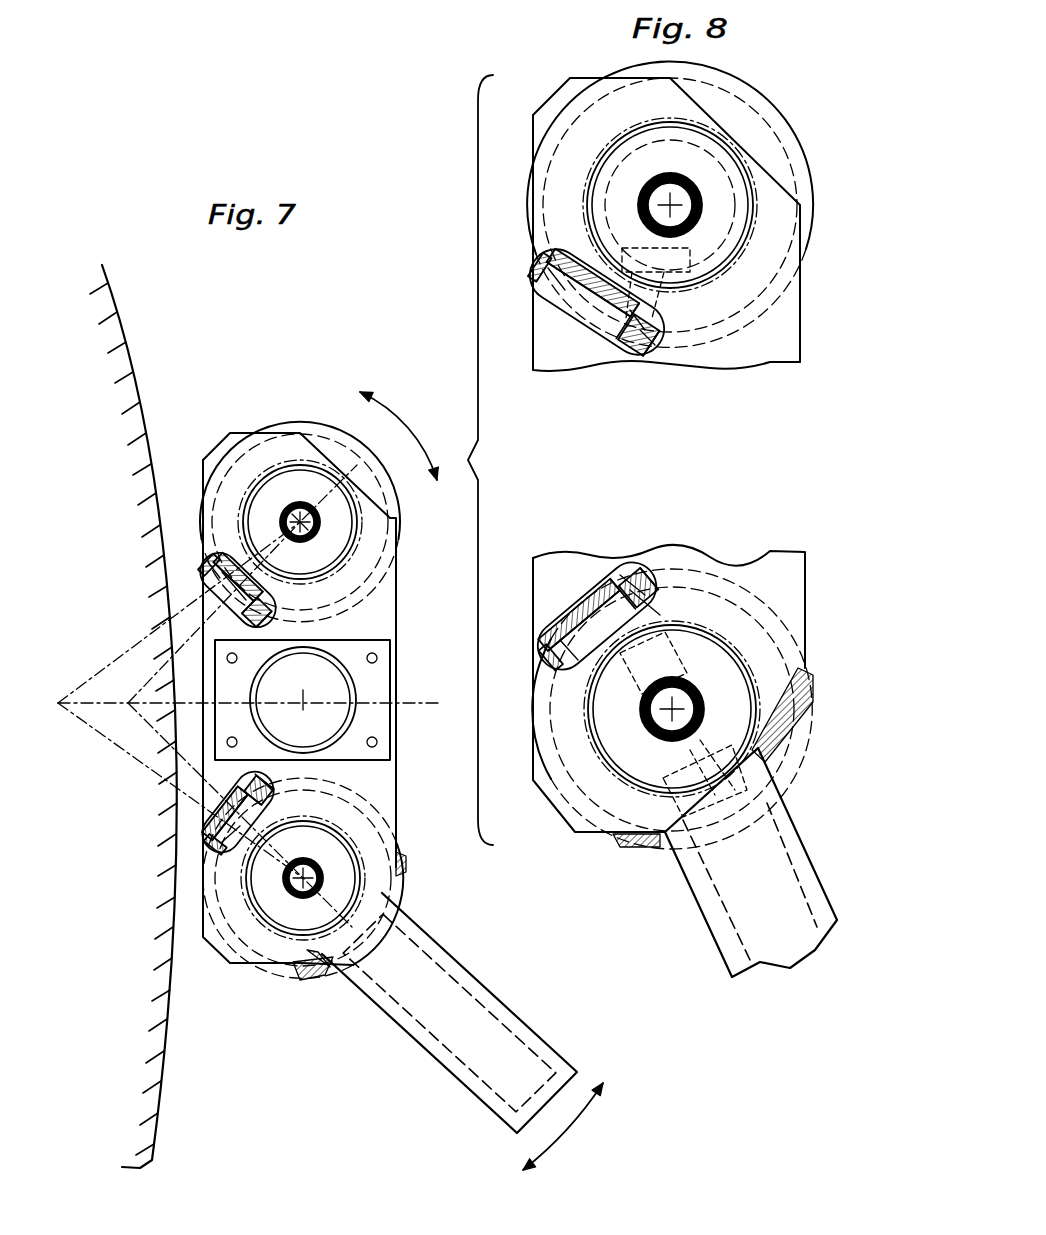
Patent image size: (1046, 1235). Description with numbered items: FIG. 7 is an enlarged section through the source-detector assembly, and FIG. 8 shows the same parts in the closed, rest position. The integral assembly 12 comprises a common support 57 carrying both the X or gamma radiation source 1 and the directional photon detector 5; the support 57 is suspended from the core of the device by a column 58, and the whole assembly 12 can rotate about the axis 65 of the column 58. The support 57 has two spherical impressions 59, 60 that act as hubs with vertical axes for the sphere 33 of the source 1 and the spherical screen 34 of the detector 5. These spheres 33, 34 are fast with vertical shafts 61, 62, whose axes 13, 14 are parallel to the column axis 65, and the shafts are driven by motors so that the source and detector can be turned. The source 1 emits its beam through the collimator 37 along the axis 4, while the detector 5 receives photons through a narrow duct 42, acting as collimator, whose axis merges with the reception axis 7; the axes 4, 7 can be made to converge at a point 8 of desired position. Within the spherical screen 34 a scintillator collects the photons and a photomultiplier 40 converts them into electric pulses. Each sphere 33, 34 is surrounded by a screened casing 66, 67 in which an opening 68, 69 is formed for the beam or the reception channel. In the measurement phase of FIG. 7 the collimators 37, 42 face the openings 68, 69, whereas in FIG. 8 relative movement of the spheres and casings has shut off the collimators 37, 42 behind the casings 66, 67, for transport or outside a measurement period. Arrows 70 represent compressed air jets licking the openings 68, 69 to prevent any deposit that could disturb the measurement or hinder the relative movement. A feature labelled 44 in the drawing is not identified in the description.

In FIG. 7, the X or gamma radiation source 1 is at (290, 415).
In FIG. 8, the X or gamma radiation source 1 is at (524, 114).
In FIG. 7, the axis of the emission window 4 is at (137, 645).
In FIG. 7, the directional photon detector 5 is at (362, 1017).
In FIG. 7, the axis of the reception window 7 is at (143, 766).
In FIG. 7, the convergence point 8 is at (58, 705).
In FIG. 7, the integral assembly 12 is at (402, 623).
In FIG. 8, the integral assembly 12 is at (666, 224).
In FIG. 7, the axis of rotation of the source shaft 13 is at (282, 507).
In FIG. 8, the axis of rotation of the source shaft 13 is at (680, 195).
In FIG. 7, the axis of rotation of the detector shaft 14 is at (290, 897).
In FIG. 8, the axis of rotation of the detector shaft 14 is at (657, 733).
In FIG. 7, the sphere of the source 33 is at (357, 472).
In FIG. 8, the sphere of the source 33 is at (580, 295).
In FIG. 7, the spherical screen of the detector 34 is at (290, 923).
In FIG. 8, the spherical screen of the detector 34 is at (583, 635).
In FIG. 7, the collimator of the source 37 is at (232, 580).
In FIG. 8, the collimator of the source 37 is at (627, 317).
In FIG. 7, the photomultiplier 40 is at (470, 1008).
In FIG. 8, the photomultiplier 40 is at (790, 847).
In FIG. 7, the narrow duct 42 is at (250, 853).
In FIG. 8, the narrow duct 42 is at (640, 605).
In FIG. 7, the support wall 44 is at (123, 320).
In FIG. 7, the common support 57 is at (387, 795).
In FIG. 8, the common support 57 is at (673, 696).
In FIG. 7, the column 58 is at (390, 667).
In FIG. 7, the spherical impression for the source sphere 59 is at (367, 558).
In FIG. 8, the spherical impression for the source sphere 59 is at (670, 204).
In FIG. 7, the spherical impression for the detector sphere 60 is at (360, 840).
In FIG. 8, the spherical impression for the detector sphere 60 is at (672, 709).
In FIG. 7, the vertical shaft of the source sphere 61 is at (323, 527).
In FIG. 7, the vertical shaft of the detector sphere 62 is at (323, 865).
In FIG. 7, the axis of the column 65 is at (303, 703).
In FIG. 7, the screened casing of the source 66 is at (210, 573).
In FIG. 8, the screened casing of the source 66 is at (637, 348).
In FIG. 7, the screened casing of the detector 67 is at (272, 782).
In FIG. 8, the screened casing of the detector 67 is at (627, 585).
In FIG. 7, the opening in the source casing 68 is at (233, 595).
In FIG. 8, the opening in the source casing 68 is at (560, 283).
In FIG. 7, the opening in the detector casing 69 is at (213, 813).
In FIG. 8, the opening in the detector casing 69 is at (582, 610).
In FIG. 7, the compressed air jets 70 is at (218, 586).